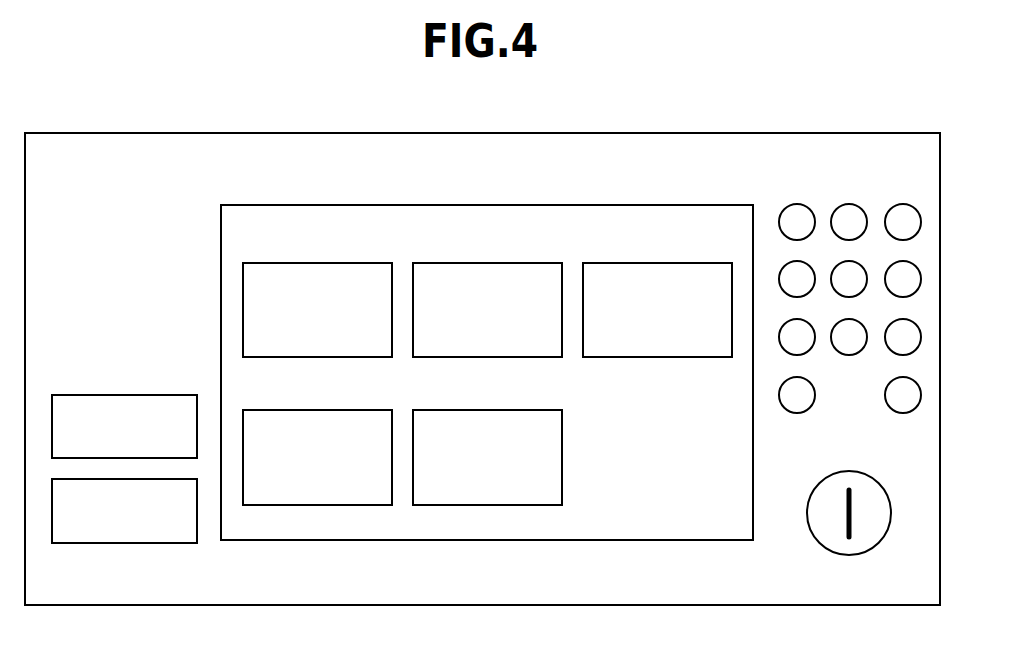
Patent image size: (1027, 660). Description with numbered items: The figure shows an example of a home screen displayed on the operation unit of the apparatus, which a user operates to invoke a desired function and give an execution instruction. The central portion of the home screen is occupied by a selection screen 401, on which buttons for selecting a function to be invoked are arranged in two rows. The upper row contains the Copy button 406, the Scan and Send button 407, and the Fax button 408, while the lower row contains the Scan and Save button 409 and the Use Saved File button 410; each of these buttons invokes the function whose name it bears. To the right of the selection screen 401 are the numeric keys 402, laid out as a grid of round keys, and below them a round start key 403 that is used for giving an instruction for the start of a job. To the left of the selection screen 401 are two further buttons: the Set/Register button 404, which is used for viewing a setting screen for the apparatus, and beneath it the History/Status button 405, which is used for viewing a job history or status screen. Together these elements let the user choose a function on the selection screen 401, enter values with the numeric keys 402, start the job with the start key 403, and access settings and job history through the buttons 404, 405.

The selection screen 401 is at (220, 240).
The numeric keys 402 is at (822, 205).
The start key 403 is at (849, 471).
The Set/Register button 404 is at (125, 394).
The History/Status button 405 is at (124, 545).
The Copy button 406 is at (317, 262).
The Scan and Send button 407 is at (486, 262).
The Fax button 408 is at (655, 262).
The Scan and Save button 409 is at (273, 410).
The Use Saved File button 410 is at (433, 410).